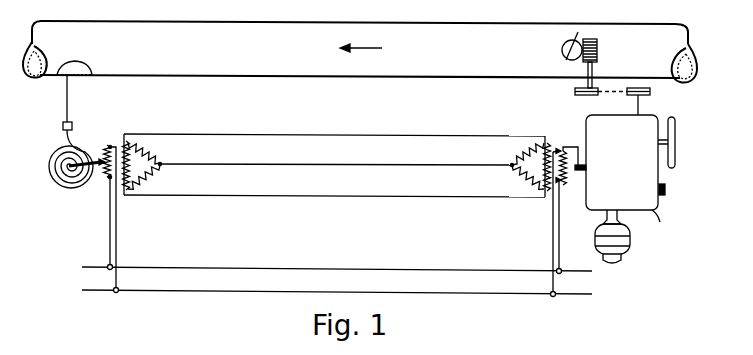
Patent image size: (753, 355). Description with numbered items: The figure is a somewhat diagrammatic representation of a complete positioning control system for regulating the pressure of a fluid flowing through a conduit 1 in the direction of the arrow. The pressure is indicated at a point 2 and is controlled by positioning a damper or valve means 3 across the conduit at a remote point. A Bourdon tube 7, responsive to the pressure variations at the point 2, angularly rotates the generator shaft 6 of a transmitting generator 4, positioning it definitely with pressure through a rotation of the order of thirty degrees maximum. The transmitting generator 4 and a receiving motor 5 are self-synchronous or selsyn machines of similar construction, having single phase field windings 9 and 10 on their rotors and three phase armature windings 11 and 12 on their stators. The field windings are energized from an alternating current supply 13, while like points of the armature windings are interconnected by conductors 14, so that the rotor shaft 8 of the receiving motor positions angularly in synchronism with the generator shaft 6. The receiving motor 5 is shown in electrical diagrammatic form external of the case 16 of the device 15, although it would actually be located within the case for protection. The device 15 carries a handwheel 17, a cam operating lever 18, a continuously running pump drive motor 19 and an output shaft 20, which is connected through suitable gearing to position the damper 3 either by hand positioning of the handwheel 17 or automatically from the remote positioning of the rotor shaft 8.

The conduit 1 is at (360, 78).
The point 2 is at (70, 76).
The damper or valve means 3 is at (561, 60).
The transmitting generator 4 is at (130, 174).
The receiving motor 5 is at (540, 176).
The generator shaft 6 is at (106, 178).
The Bourdon tube 7 is at (52, 180).
The rotor shaft 8 is at (579, 164).
The single phase field winding 9 is at (103, 146).
The single phase field winding 10 is at (569, 173).
The three phase armature winding 11 is at (160, 160).
The three phase armature winding 12 is at (516, 156).
The alternating current supply 13 is at (83, 267).
The conductors 14 is at (328, 197).
The device 15 is at (622, 162).
The case 16 is at (667, 223).
The handwheel 17 is at (676, 133).
The cam operating lever 18 is at (666, 193).
The pump drive continuously running motor 19 is at (630, 250).
The output shaft 20 is at (638, 108).